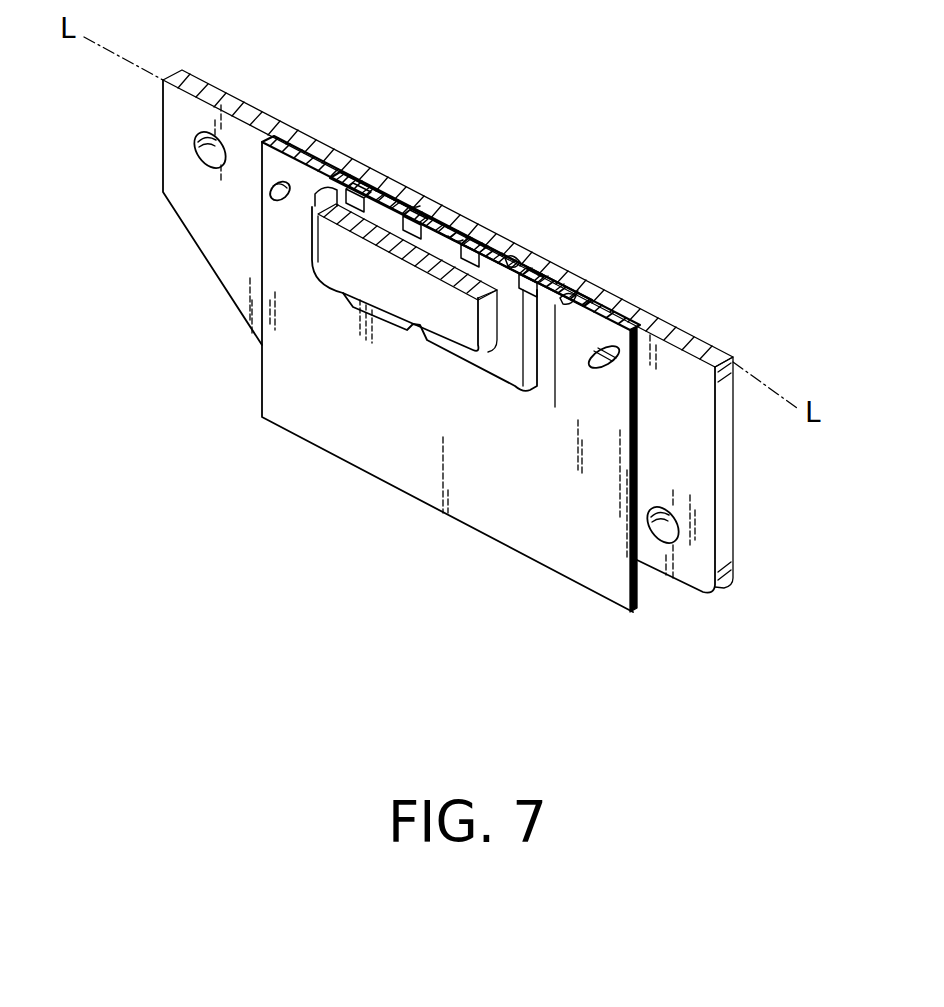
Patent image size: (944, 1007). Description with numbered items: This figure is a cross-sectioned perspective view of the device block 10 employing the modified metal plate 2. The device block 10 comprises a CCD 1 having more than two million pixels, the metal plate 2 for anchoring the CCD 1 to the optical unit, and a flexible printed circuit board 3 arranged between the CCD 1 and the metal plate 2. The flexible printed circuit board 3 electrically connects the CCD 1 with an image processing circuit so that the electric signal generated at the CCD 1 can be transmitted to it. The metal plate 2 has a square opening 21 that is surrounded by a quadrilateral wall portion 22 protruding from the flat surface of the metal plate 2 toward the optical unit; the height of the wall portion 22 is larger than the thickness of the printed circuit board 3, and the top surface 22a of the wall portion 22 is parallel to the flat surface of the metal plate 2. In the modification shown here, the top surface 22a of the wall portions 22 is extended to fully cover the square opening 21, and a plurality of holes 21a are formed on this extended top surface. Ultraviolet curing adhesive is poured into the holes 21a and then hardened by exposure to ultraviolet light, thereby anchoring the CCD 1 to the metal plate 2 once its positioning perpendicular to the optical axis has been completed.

The CCD 1 is at (372, 308).
The metal plate 2 is at (190, 199).
The flexible printed circuit board 3 is at (598, 578).
The device block 10 is at (703, 194).
The square opening 21 is at (453, 177).
The holes (openings) 21a is at (510, 262).
The wall portion 22 is at (352, 198).
The top surface 22a is at (313, 203).
The ultraviolet-curing adhesive is at (400, 201).